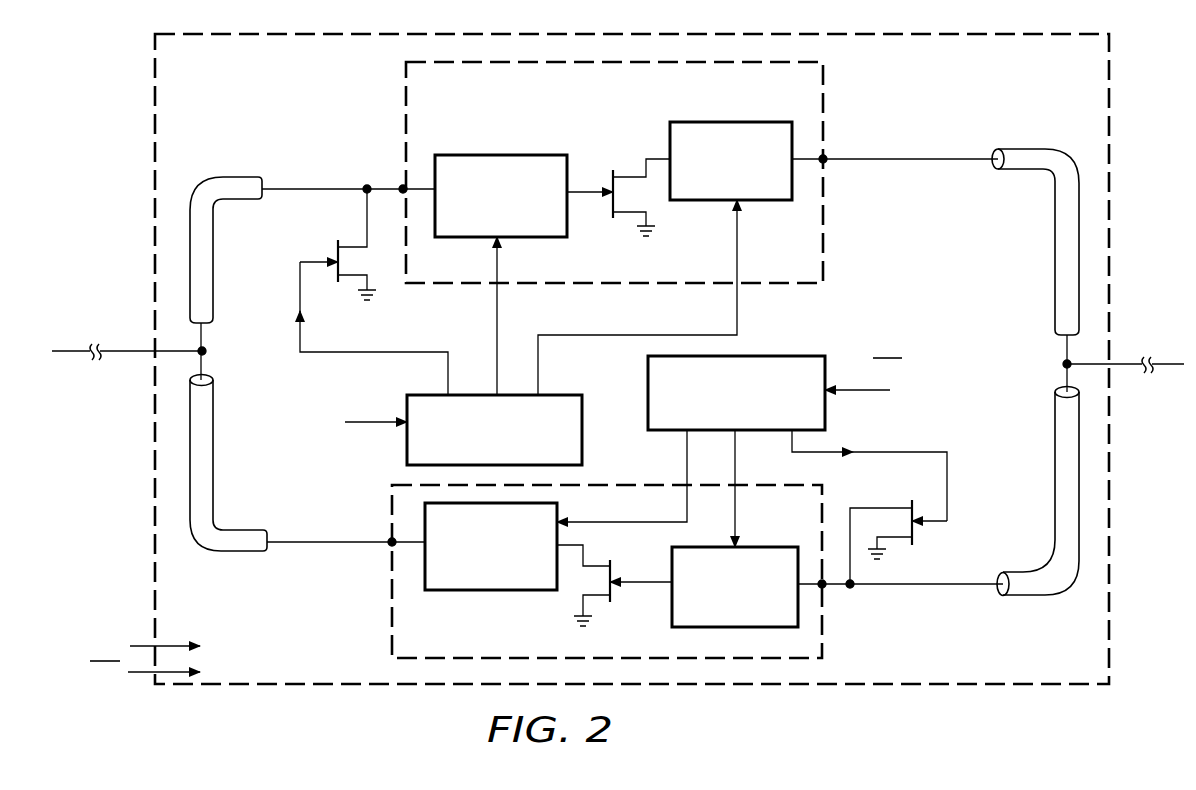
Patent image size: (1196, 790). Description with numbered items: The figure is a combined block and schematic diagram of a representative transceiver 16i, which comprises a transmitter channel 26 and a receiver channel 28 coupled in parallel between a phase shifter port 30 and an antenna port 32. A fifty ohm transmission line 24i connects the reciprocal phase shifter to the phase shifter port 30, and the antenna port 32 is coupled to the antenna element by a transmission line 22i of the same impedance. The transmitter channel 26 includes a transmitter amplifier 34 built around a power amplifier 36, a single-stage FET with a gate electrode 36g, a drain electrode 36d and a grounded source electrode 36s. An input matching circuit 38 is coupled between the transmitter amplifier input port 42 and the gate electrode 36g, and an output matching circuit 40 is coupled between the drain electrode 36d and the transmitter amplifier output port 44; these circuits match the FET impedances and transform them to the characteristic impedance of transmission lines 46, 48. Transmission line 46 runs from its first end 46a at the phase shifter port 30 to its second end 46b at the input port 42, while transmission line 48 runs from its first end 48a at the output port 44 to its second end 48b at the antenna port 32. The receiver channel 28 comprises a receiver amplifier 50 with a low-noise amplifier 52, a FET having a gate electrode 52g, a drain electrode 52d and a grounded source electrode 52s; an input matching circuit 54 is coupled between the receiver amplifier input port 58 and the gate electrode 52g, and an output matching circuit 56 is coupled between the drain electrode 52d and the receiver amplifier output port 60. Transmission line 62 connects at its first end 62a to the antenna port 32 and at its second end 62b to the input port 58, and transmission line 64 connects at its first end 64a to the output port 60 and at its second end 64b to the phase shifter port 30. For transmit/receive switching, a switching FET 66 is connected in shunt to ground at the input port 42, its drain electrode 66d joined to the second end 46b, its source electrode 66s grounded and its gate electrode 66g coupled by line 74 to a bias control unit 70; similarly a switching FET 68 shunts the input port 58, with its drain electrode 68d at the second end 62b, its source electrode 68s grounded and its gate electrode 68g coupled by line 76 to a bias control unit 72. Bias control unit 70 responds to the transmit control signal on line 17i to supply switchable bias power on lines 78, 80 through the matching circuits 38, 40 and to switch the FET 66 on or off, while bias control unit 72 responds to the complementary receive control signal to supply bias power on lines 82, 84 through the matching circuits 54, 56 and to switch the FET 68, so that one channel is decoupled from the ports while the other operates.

The transceiver 16i is at (152, 72).
The transmit control signal line 17i is at (496, 517).
The transmission line 22i is at (1176, 348).
The transmission line 24i is at (86, 350).
The transmitter channel 26 is at (355, 139).
The receiver channel 28 is at (347, 577).
The phase shifter port 30 is at (200, 349).
The antenna port 32 is at (1060, 364).
The transmitter amplifier 34 is at (405, 95).
The power amplifier 36 is at (583, 156).
The drain electrode 36d is at (646, 170).
The gate electrode 36g is at (585, 195).
The source electrode 36s is at (648, 222).
The input matching circuit 38 is at (448, 155).
The output matching circuit 40 is at (672, 122).
The transmitter amplifier input port 42 is at (402, 187).
The transmitter amplifier output port 44 is at (824, 160).
The transmission line 46 is at (210, 178).
The first end 46a is at (207, 324).
The second end 46b is at (263, 182).
The transmission line 48 is at (1036, 148).
The first end 48a is at (996, 158).
The second end 48b is at (1058, 334).
The receiver amplifier 50 is at (390, 585).
The low-noise amplifier 52 is at (616, 601).
The drain electrode 52d is at (586, 556).
The gate electrode 52g is at (641, 582).
The source electrode 52s is at (583, 614).
The input matching circuit 54 is at (713, 628).
The output matching circuit 56 is at (508, 592).
The receiver amplifier input port 58 is at (825, 588).
The receiver amplifier output port 60 is at (390, 540).
The transmission line 62 is at (1055, 480).
The first end 62a is at (1056, 388).
The second end 62b is at (1002, 592).
The transmission line 64 is at (232, 553).
The first end 64a is at (267, 552).
The second end 64b is at (210, 380).
The switching FET 66 is at (323, 232).
The drain electrode 66d is at (367, 222).
The gate electrode 66g is at (302, 258).
The source electrode 66s is at (363, 290).
The switching FET 68 is at (925, 536).
The drain electrode 68d is at (862, 502).
The gate electrode 68g is at (928, 518).
The source electrode 68s is at (890, 540).
The bias control unit 70 is at (430, 395).
The bias control unit 72 is at (648, 369).
The line 74 is at (338, 353).
The line 76 is at (880, 452).
The line 78 is at (497, 315).
The line 80 is at (550, 337).
The line 82 is at (738, 454).
The line 84 is at (687, 452).